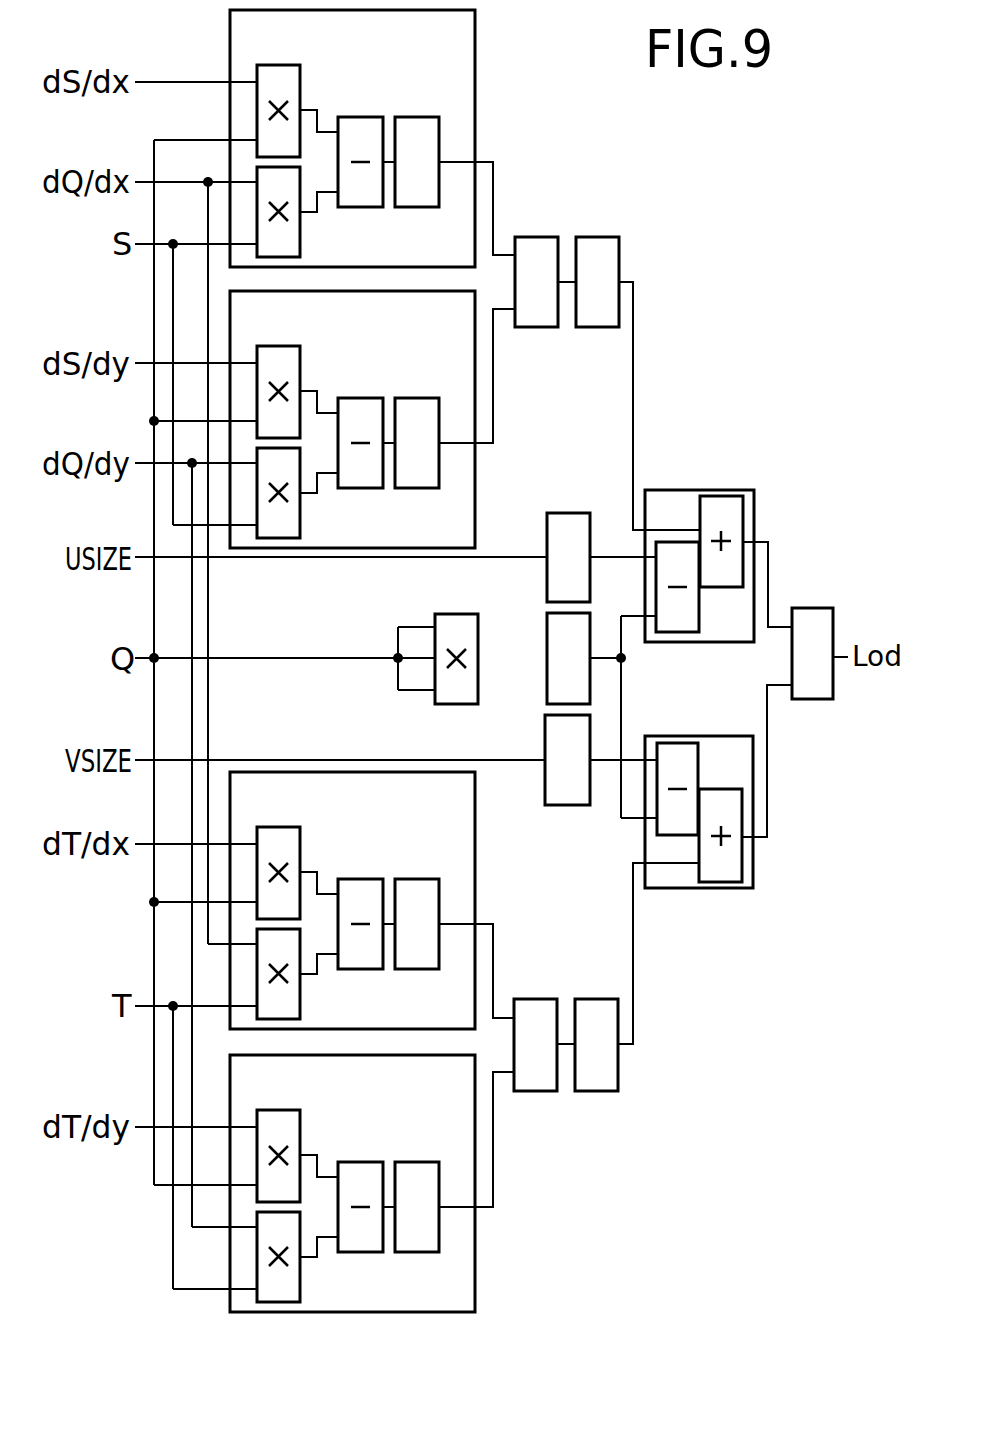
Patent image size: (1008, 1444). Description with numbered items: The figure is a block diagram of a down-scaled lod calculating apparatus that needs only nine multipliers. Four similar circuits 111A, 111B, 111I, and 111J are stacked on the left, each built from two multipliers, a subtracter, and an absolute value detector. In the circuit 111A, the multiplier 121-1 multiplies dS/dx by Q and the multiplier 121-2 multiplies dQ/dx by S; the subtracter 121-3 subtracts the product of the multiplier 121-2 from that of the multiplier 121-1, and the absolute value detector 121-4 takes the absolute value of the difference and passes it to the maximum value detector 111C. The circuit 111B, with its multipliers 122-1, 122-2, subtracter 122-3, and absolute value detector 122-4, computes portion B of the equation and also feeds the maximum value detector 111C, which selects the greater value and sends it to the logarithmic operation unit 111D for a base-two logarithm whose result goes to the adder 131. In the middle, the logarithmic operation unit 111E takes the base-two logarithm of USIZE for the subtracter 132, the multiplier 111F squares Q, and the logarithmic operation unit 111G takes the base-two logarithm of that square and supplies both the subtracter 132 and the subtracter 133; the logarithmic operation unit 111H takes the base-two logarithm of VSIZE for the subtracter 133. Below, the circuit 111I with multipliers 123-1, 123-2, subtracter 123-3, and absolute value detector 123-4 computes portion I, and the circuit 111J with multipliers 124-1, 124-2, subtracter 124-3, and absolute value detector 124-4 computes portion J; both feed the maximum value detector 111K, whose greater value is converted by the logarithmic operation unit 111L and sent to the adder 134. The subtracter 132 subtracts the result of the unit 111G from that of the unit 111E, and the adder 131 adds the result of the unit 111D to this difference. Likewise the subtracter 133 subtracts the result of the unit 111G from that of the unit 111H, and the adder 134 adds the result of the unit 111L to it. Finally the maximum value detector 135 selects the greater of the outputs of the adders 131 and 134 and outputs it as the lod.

The circuit 111A is at (475, 70).
The circuit 111B is at (475, 487).
The maximum value detector 111C is at (532, 237).
The logarithmic operation unit 111D is at (600, 237).
The logarithmic operation unit 111E is at (547, 585).
The multiplier 111F is at (435, 616).
The logarithmic operation unit 111G is at (547, 690).
The logarithmic operation unit 111H is at (567, 807).
The circuit 111I is at (475, 882).
The circuit 111J is at (475, 1280).
The maximum value detector 111K is at (536, 1093).
The logarithmic operation unit 111L is at (600, 999).
The multiplier 121-1 is at (283, 65).
The multiplier 121-2 is at (300, 240).
The subtracter 121-3 is at (360, 117).
The absolute value detector 121-4 is at (415, 117).
The multiplier 122-1 is at (283, 346).
The multiplier 122-2 is at (300, 521).
The subtracter 122-3 is at (360, 398).
The absolute value detector 122-4 is at (415, 398).
The multiplier 123-1 is at (283, 827).
The multiplier 123-2 is at (300, 1002).
The subtracter 123-3 is at (360, 879).
The absolute value detector 123-4 is at (415, 879).
The multiplier 124-1 is at (283, 1110).
The multiplier 124-2 is at (300, 1285).
The subtracter 124-3 is at (360, 1162).
The absolute value detector 124-4 is at (415, 1162).
The adder 131 is at (720, 496).
The subtracter 132 is at (672, 542).
The subtracter 133 is at (675, 835).
The adder 134 is at (722, 882).
The maximum value detector 135 is at (812, 608).